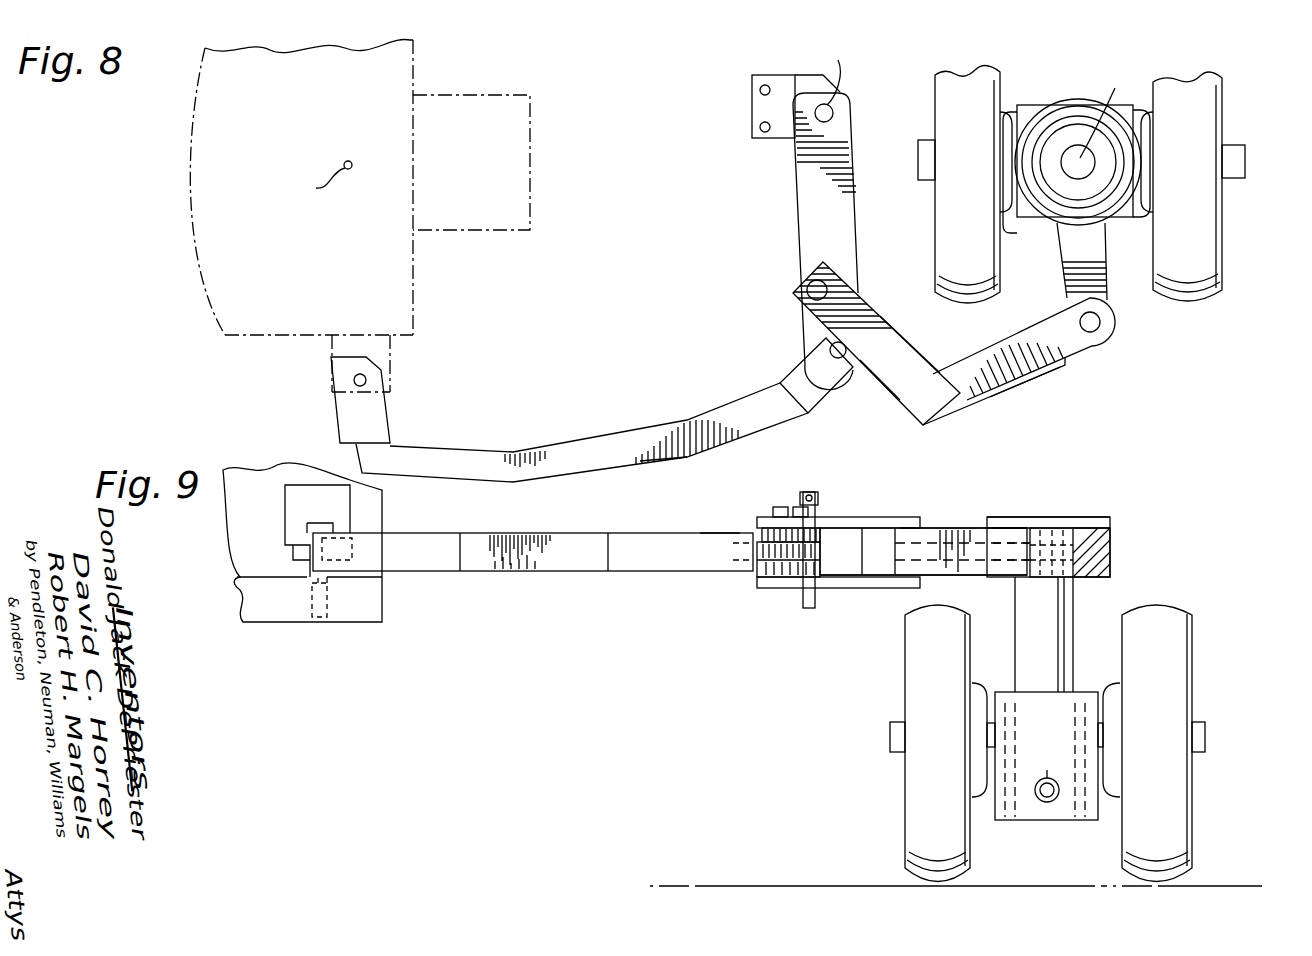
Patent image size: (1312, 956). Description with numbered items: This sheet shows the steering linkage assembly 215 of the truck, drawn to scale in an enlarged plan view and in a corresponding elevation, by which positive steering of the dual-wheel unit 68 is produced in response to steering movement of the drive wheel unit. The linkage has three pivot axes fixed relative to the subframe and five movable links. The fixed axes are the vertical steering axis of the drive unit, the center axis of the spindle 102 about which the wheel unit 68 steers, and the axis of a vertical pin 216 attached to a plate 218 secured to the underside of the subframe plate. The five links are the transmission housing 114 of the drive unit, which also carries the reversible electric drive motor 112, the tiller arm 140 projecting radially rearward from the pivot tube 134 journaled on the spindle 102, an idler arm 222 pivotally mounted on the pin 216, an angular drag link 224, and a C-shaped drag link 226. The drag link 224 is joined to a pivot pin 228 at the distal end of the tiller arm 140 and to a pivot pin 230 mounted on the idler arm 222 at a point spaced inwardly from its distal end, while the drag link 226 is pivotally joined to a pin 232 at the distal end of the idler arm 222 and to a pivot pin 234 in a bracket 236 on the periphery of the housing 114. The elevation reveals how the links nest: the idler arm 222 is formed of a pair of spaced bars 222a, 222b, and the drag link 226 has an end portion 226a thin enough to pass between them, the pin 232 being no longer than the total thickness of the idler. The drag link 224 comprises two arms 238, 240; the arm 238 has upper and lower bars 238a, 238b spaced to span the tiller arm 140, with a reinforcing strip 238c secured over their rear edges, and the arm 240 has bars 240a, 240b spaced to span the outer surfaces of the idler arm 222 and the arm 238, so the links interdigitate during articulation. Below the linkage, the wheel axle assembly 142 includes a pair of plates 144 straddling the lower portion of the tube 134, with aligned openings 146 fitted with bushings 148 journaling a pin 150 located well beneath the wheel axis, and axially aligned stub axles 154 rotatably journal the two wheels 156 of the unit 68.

In FIG. 8, the wheel unit 68 is at (1087, 166).
In FIG. 8, the spindle 102 is at (1067, 146).
In FIG. 8, the reversible electric drive motor 112 is at (530, 215).
In FIG. 8, the housing 114 is at (413, 285).
In FIG. 9, the housing 114 is at (382, 510).
In FIG. 9, the pivot tube 134 is at (1078, 600).
In FIG. 8, the tiller arm 140 is at (1105, 290).
In FIG. 9, the tiller arm 140 is at (1075, 540).
In FIG. 8, the wheel axle assembly 142 is at (1036, 95).
In FIG. 9, the wheel axle assembly 142 is at (1093, 830).
In FIG. 9, the plates 144 is at (1005, 822).
In FIG. 9, the aligned openings 146 is at (1043, 800).
In FIG. 9, the bushings 148 is at (1048, 803).
In FIG. 9, the pin 150 is at (1050, 775).
In FIG. 8, the stub axles 154 is at (918, 162).
In FIG. 8, the wheels 156 is at (990, 62).
In FIG. 9, the wheels 156 is at (903, 680).
In FIG. 8, the linkage assembly 215 is at (706, 455).
In FIG. 9, the linkage assembly 215 is at (708, 468).
In FIG. 8, the vertical pin 216 is at (842, 102).
In FIG. 9, the vertical pin 216 is at (855, 492).
In FIG. 8, the plate 218 is at (795, 50).
In FIG. 8, the idler arm 222 is at (800, 195).
In FIG. 9, the idler arm 222 is at (830, 528).
In FIG. 8, the bar 222a is at (800, 238).
In FIG. 9, the bar 222a is at (772, 517).
In FIG. 9, the bar 222b is at (757, 588).
In FIG. 8, the angular drag link 224 is at (892, 401).
In FIG. 8, the C-shaped drag link 226 is at (570, 440).
In FIG. 9, the C-shaped drag link 226 is at (574, 545).
In FIG. 8, the end portion 226a is at (808, 413).
In FIG. 9, the end portion 226a is at (778, 585).
In FIG. 8, the pivot pin 228 is at (1113, 342).
In FIG. 8, the pivot pin 230 is at (805, 293).
In FIG. 8, the pin 232 is at (830, 348).
In FIG. 8, the pivot pin 234 is at (366, 380).
In FIG. 9, the pivot pin 234 is at (307, 578).
In FIG. 8, the bracket 236 is at (398, 363).
In FIG. 8, the arm 238 is at (1080, 355).
In FIG. 9, the arm 238 is at (1030, 498).
In FIG. 8, the upper bar 238a is at (995, 418).
In FIG. 9, the upper bar 238a is at (1062, 530).
In FIG. 9, the lower bar 238b is at (1073, 550).
In FIG. 8, the reinforcing strip 238c is at (1013, 390).
In FIG. 9, the reinforcing strip 238c is at (1070, 500).
In FIG. 8, the arm 240 is at (855, 280).
In FIG. 9, the arm 240 is at (866, 600).
In FIG. 8, the bar 240a is at (935, 358).
In FIG. 9, the bar 240a is at (970, 500).
In FIG. 9, the bar 240b is at (855, 590).